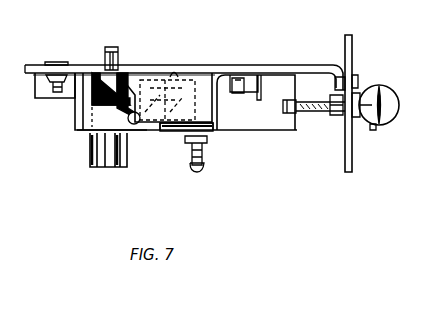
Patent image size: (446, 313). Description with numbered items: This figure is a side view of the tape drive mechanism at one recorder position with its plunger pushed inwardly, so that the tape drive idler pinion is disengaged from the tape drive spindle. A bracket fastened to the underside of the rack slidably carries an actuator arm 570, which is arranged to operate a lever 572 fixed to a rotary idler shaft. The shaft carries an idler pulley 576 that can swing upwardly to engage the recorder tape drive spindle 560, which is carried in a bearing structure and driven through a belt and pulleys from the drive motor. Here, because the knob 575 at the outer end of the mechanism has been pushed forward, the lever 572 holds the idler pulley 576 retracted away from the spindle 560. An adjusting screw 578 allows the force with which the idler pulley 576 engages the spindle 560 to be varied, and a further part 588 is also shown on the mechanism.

The recorder tape drive spindle 560 is at (119, 56).
The idler pulley 576 is at (176, 73).
The lever 572 is at (138, 134).
The bracket 588 is at (215, 132).
The adjusting screw 578 is at (207, 163).
The actuator arm 570 is at (273, 123).
The knob 575 is at (372, 127).